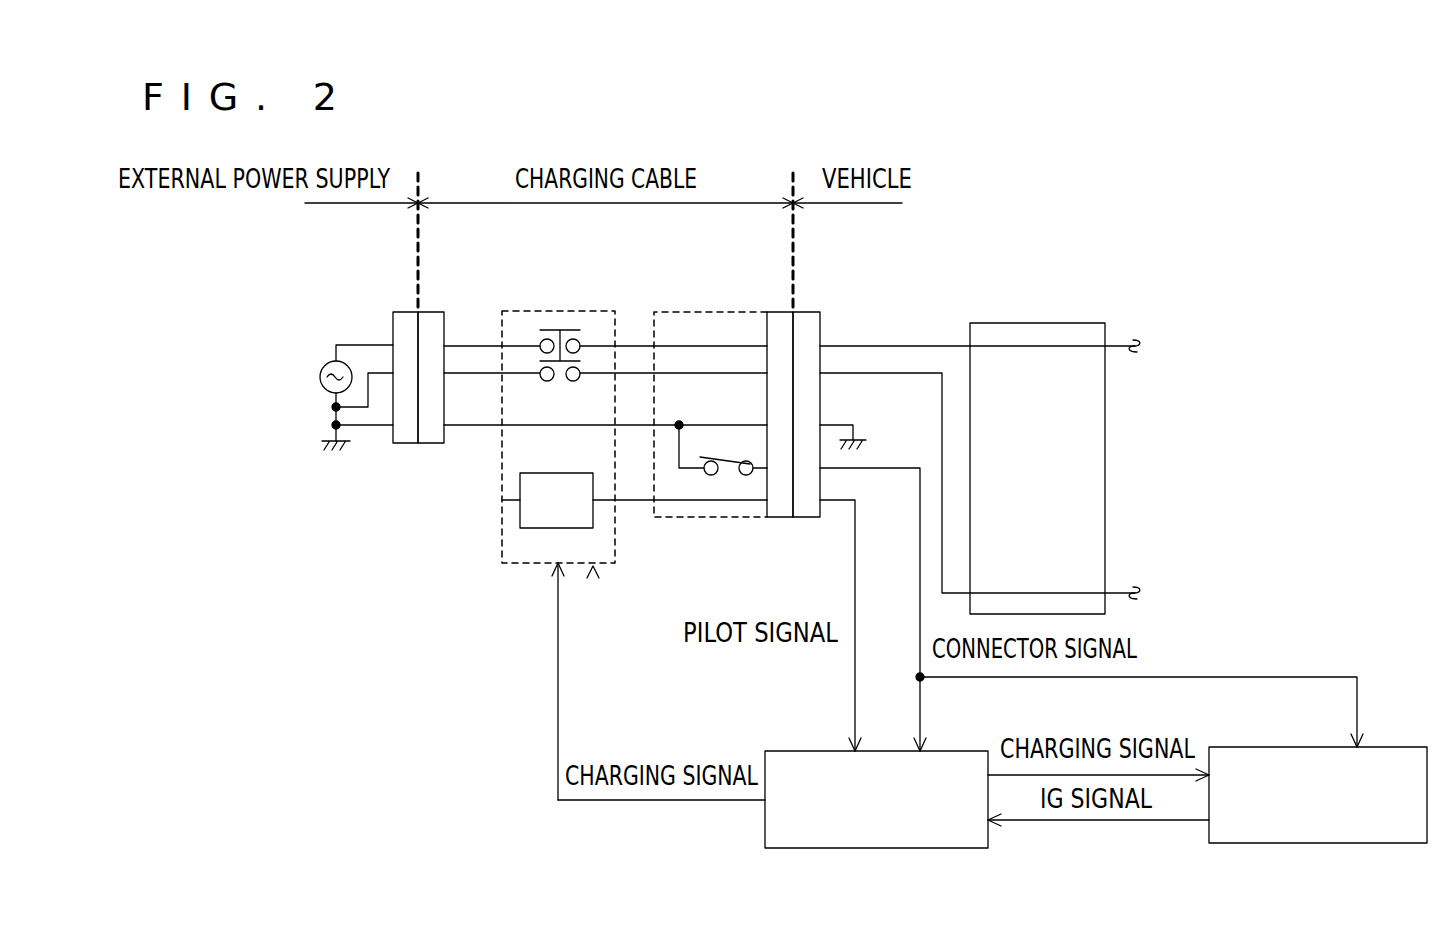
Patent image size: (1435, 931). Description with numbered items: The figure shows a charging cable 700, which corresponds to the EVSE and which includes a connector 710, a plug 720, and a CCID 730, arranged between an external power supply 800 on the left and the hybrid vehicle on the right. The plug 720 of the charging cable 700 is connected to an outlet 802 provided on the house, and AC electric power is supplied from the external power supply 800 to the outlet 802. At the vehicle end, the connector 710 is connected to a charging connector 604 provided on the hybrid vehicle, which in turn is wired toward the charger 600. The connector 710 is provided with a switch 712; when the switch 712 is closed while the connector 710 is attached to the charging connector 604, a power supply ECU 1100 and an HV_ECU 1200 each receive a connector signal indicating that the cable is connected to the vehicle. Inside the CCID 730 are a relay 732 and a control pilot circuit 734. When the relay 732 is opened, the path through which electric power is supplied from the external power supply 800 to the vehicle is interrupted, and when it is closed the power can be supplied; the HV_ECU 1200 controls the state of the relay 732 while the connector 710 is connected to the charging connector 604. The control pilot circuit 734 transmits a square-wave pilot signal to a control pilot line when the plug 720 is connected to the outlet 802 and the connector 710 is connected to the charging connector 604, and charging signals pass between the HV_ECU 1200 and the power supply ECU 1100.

The charger 600 is at (1060, 323).
The charging connector 604 is at (806, 312).
The charging cable 700 is at (652, 296).
The connector 710 is at (782, 312).
The switch 712 is at (731, 486).
The plug 720 is at (427, 312).
The CCID (Charging Circuit Interrupt Device) 730 is at (513, 565).
The relay 732 is at (592, 326).
The control pilot circuit 734 is at (502, 500).
The external power supply 800 is at (336, 345).
The outlet 802 is at (412, 444).
The power supply ECU 1100 is at (1337, 845).
The HV_ECU 1200 is at (893, 849).